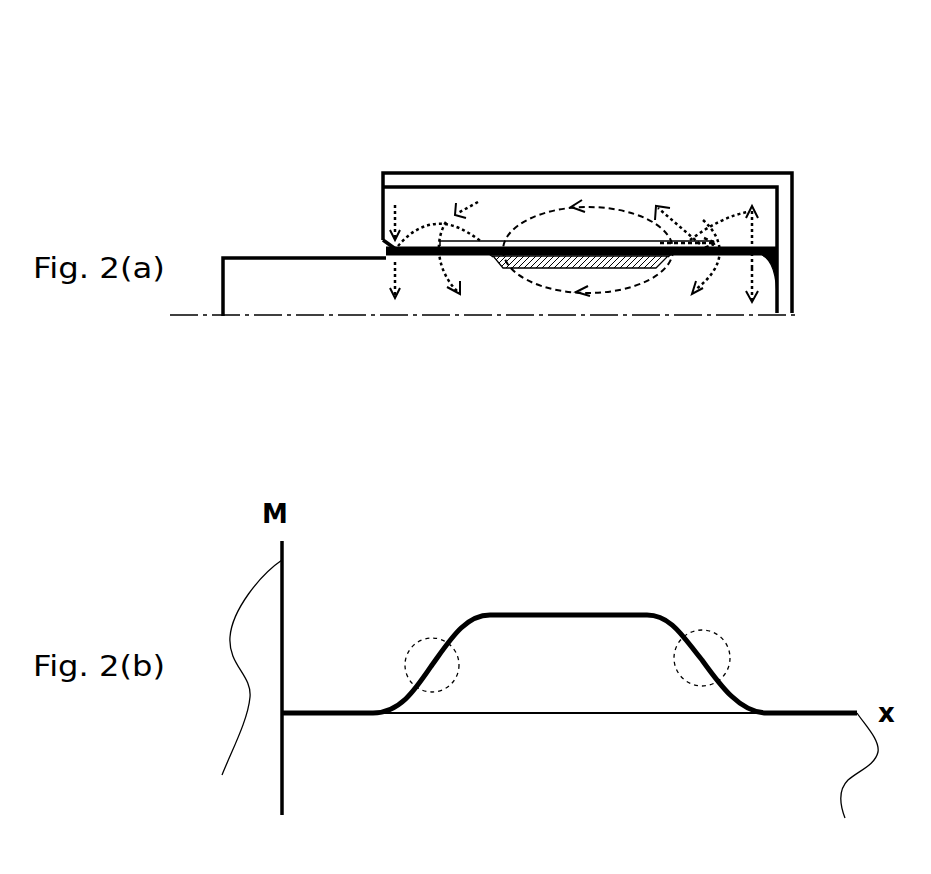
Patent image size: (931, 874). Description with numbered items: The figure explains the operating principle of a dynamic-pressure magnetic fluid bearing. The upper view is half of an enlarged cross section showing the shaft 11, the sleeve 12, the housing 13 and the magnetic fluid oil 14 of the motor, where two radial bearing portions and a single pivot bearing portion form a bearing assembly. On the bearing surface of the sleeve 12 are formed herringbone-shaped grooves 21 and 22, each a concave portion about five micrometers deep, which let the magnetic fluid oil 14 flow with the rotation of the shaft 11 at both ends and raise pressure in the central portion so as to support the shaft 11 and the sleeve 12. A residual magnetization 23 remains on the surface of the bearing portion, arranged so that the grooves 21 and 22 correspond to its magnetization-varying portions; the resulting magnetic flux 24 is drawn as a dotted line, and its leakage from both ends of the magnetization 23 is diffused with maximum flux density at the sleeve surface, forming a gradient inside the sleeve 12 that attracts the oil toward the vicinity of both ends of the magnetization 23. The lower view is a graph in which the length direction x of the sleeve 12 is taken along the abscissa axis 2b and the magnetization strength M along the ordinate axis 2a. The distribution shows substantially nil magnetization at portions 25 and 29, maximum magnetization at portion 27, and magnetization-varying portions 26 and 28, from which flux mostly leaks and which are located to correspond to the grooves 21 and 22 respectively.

In FIG. 2A, the shaft 11 is at (302, 282).
In FIG. 2A, the sleeve 12 is at (518, 202).
In FIG. 2A, the housing 13 is at (743, 174).
In FIG. 2A, the magnetic fluid oil 14 is at (513, 248).
In FIG. 2A, the herringbone-shaped groove 21 is at (410, 234).
In FIG. 2A, the herringbone-shaped groove 22 is at (740, 230).
In FIG. 2A, the magnetization 23 is at (623, 240).
In FIG. 2A, the magnetic flux 24 is at (571, 207).
In FIG. 2B, the magnetization distribution portion of substantially nil magnetization 25 is at (337, 715).
In FIG. 2B, the magnetization-varying portion 26 is at (455, 670).
In FIG. 2B, the maximum magnetization 27 is at (545, 613).
In FIG. 2B, the magnetization-varying portion 28 is at (730, 655).
In FIG. 2B, the magnetization distribution portion of substantially nil magnetization 29 is at (768, 714).
In FIG. 2B, the ordinate axis 2a is at (238, 688).
In FIG. 2B, the abscissa axis 2b is at (862, 787).